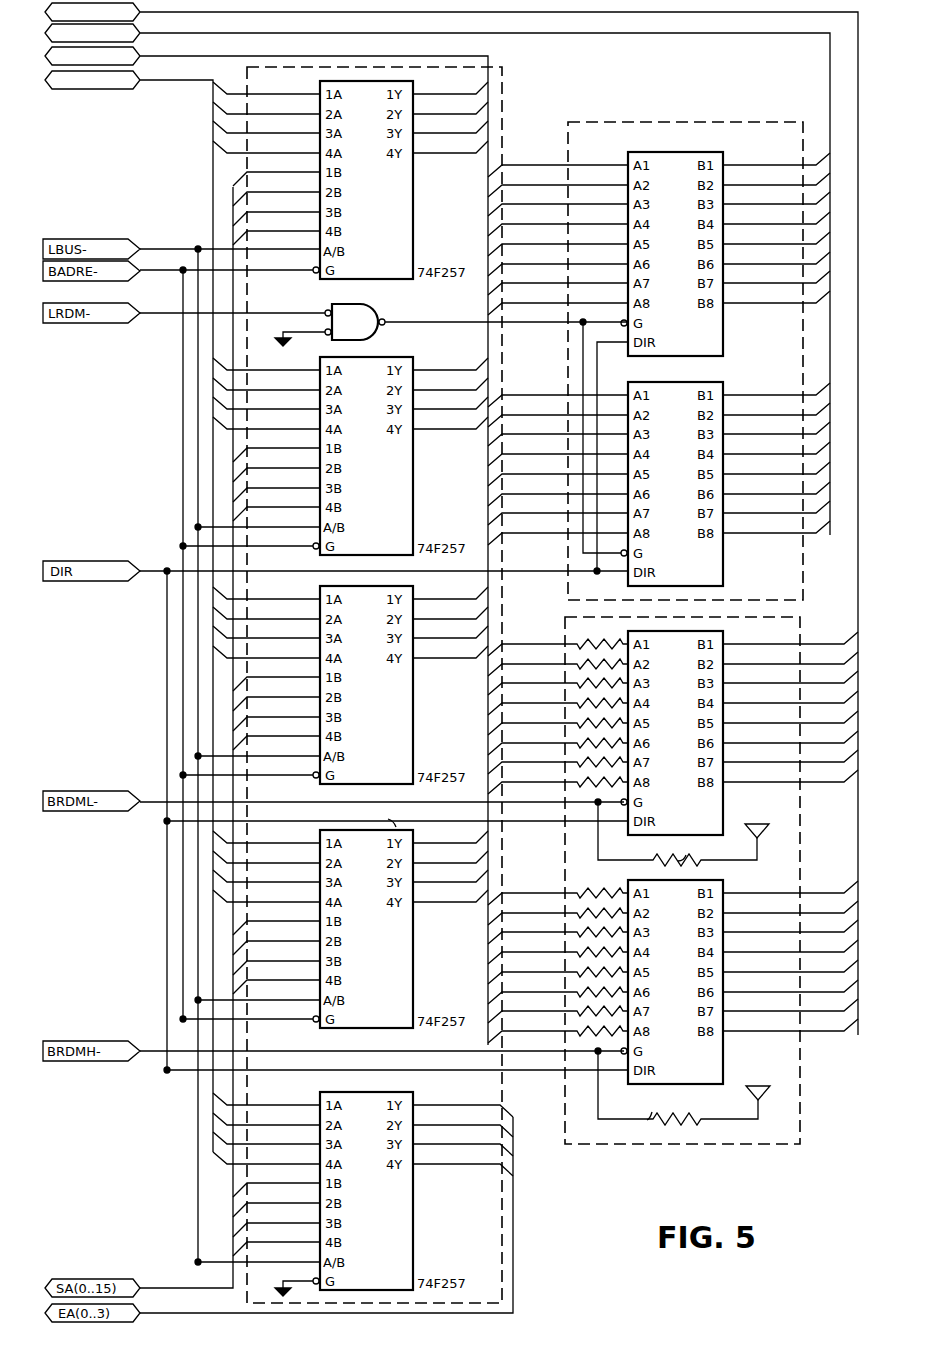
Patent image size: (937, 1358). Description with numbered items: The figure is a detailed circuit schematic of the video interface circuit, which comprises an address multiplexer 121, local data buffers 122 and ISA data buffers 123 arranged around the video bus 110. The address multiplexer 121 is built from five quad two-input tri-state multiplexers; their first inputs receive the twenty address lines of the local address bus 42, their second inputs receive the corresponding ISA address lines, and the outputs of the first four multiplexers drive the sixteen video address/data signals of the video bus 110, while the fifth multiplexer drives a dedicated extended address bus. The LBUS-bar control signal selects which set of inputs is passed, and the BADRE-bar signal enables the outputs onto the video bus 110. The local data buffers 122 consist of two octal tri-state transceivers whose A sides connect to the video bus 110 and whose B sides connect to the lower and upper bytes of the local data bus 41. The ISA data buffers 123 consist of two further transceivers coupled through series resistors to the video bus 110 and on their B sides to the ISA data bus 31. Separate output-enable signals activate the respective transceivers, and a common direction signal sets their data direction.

The ISA data bus 31 is at (234, 6).
The local data bus 41 is at (257, 31).
The local address bus 42 is at (129, 606).
The video bus 110 is at (310, 53).
The address multiplexer 121 is at (505, 100).
The local data buffers 122 is at (632, 122).
The ISA data buffers 123 is at (806, 620).